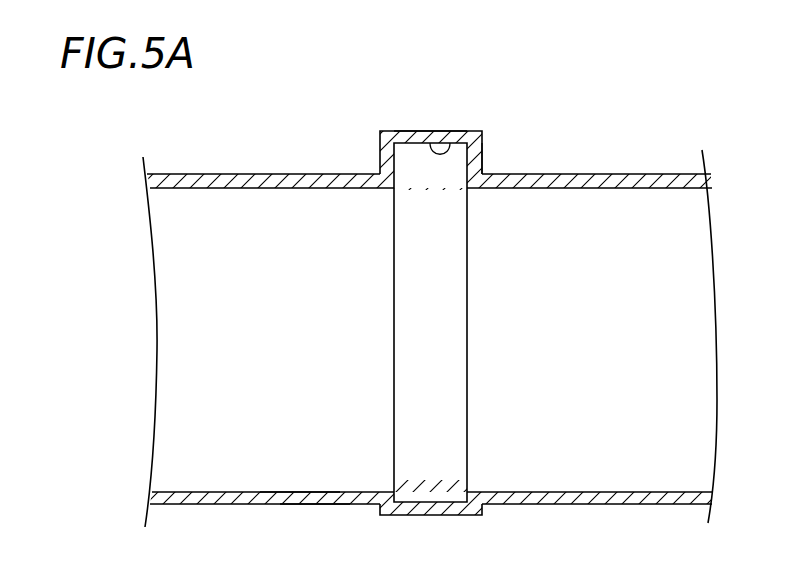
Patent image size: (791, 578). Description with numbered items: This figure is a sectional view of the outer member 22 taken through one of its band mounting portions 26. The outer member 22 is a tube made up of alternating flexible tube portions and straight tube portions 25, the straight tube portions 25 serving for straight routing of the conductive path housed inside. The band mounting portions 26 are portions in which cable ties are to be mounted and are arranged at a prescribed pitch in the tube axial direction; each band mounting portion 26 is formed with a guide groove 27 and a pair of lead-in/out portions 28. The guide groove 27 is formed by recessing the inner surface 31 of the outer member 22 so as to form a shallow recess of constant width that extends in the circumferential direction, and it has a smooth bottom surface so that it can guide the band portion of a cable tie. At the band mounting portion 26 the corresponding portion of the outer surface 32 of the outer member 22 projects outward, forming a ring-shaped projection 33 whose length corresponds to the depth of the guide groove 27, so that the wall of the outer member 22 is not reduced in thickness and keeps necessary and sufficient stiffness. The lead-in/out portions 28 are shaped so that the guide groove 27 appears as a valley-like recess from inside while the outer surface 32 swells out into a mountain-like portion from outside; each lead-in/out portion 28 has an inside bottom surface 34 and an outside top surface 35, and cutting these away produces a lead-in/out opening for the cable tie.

The outer member 22 is at (278, 137).
The straight tube portion 25 is at (645, 174).
The band mounting portion 26 is at (487, 155).
The guide groove 27 is at (443, 384).
The lead-in/out portion 28 is at (385, 132).
The inner surface 31 is at (306, 492).
The outer surface 32 is at (315, 505).
The ring-shaped projection 33 is at (410, 516).
The inside bottom surface 34 is at (448, 155).
The outside top surface 35 is at (422, 131).